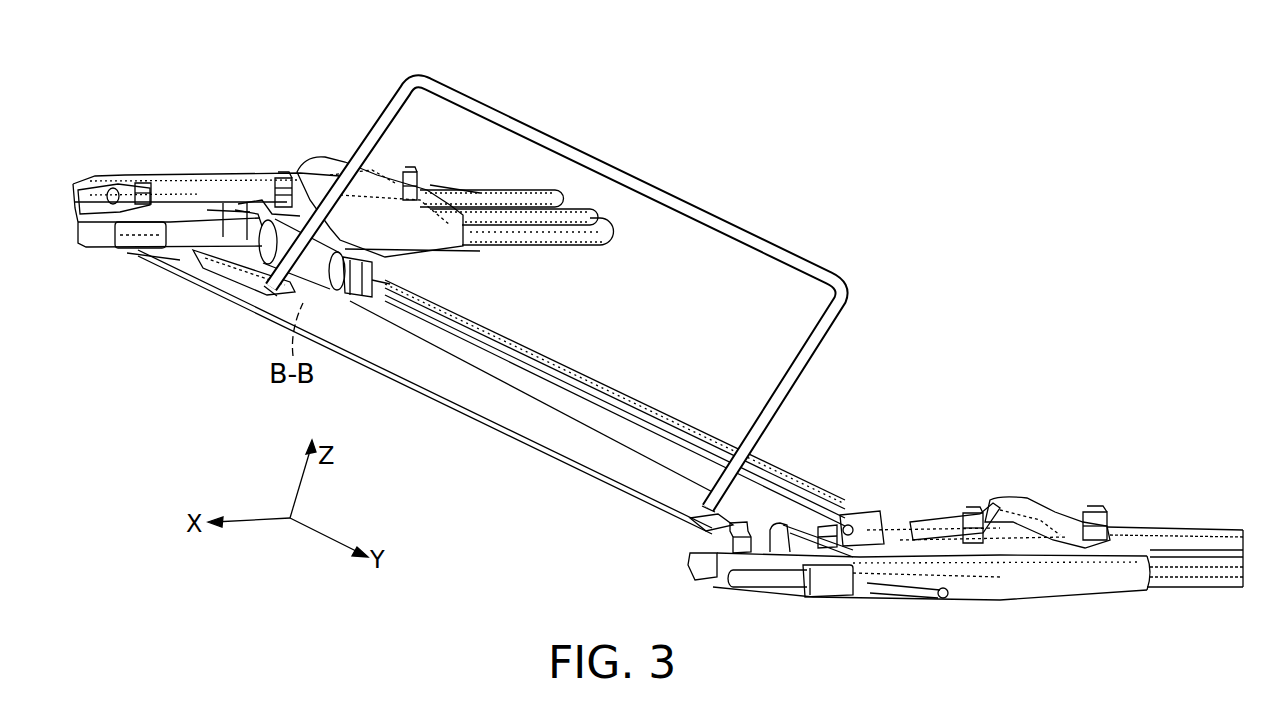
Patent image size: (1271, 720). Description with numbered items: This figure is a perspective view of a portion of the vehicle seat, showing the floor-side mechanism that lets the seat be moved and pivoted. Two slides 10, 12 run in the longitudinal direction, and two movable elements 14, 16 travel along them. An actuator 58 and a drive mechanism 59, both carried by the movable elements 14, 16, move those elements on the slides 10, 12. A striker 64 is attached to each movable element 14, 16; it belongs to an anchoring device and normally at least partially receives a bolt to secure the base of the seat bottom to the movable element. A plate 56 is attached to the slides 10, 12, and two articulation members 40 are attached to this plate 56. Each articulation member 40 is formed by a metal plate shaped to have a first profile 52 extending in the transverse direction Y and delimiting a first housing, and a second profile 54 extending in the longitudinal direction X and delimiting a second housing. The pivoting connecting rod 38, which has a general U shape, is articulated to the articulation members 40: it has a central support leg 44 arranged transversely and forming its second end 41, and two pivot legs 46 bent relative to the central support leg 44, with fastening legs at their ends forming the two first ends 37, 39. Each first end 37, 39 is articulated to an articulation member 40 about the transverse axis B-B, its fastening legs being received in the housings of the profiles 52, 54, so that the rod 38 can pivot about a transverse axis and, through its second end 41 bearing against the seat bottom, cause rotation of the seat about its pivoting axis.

The slide 10 is at (1190, 578).
The slide 12 is at (590, 246).
The movable element 14 is at (960, 580).
The movable element 16 is at (290, 170).
The first end 37 is at (252, 298).
The pivoting connecting rod 38 is at (840, 328).
The first end 39 is at (703, 504).
The articulation member 40 is at (218, 282).
The second end 41 is at (852, 290).
The central support leg 44 is at (700, 212).
The pivot leg 46 is at (376, 128).
The first profile 52 is at (197, 262).
The second profile 54 is at (208, 178).
The plate 56 is at (556, 432).
The actuator 58 is at (410, 263).
The drive mechanism 59 is at (687, 378).
The striker 64 is at (333, 156).